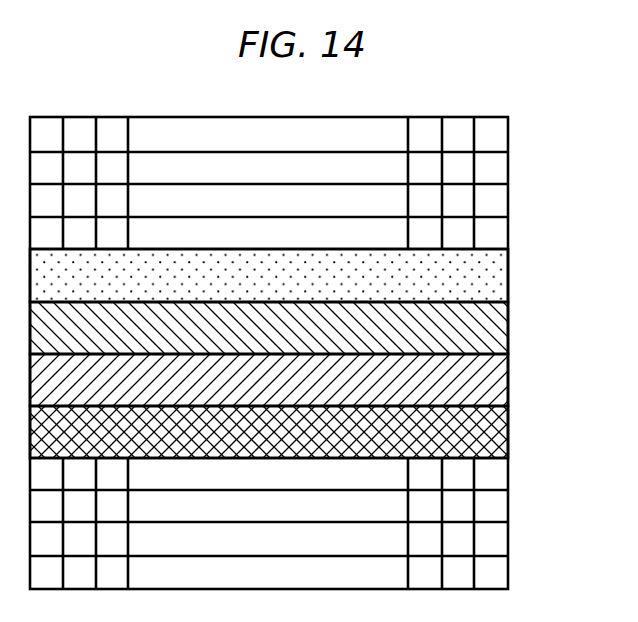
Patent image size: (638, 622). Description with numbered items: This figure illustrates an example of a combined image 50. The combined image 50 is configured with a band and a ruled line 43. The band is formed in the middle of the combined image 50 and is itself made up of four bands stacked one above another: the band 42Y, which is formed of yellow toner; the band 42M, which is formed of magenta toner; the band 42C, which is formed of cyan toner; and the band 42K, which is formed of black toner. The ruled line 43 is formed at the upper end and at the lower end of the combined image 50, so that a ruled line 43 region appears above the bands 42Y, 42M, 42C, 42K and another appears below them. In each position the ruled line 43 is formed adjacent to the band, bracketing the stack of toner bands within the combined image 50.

The combined image 50 is at (280, 117).
The ruled line 43 is at (524, 118).
The band 42Y is at (524, 251).
The band 42M is at (524, 304).
The band 42C is at (524, 356).
The band 42K is at (524, 408).